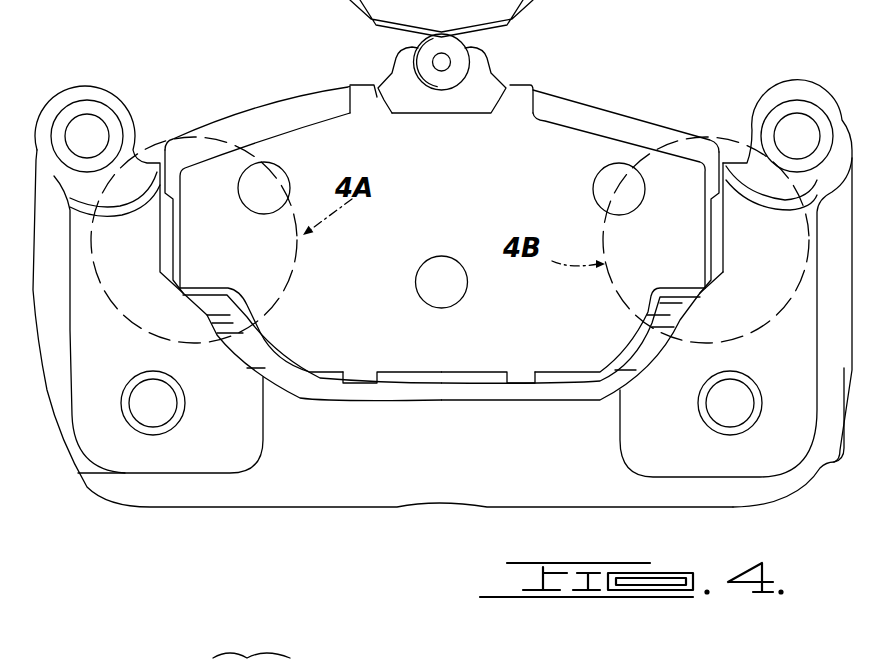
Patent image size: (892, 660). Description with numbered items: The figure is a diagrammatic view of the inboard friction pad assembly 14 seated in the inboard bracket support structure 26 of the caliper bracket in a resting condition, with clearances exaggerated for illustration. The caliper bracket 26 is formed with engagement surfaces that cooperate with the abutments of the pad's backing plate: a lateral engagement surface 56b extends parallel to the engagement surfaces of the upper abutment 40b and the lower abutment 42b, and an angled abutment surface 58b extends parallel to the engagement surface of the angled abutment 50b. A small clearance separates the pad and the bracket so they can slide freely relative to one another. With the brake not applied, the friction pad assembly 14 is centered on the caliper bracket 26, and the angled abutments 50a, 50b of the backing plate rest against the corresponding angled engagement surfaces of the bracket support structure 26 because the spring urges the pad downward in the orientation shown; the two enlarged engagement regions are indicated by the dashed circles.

The inboard friction pad assembly 14 is at (442, 191).
The inboard bracket support structure 26 is at (442, 293).
The upper abutment 40b is at (727, 185).
The lower abutment 42b is at (711, 256).
The angled abutment 50a is at (182, 288).
The angled abutment 50b is at (700, 288).
The lateral engagement surface 56b is at (714, 229).
The angled abutment surface 58b is at (719, 279).